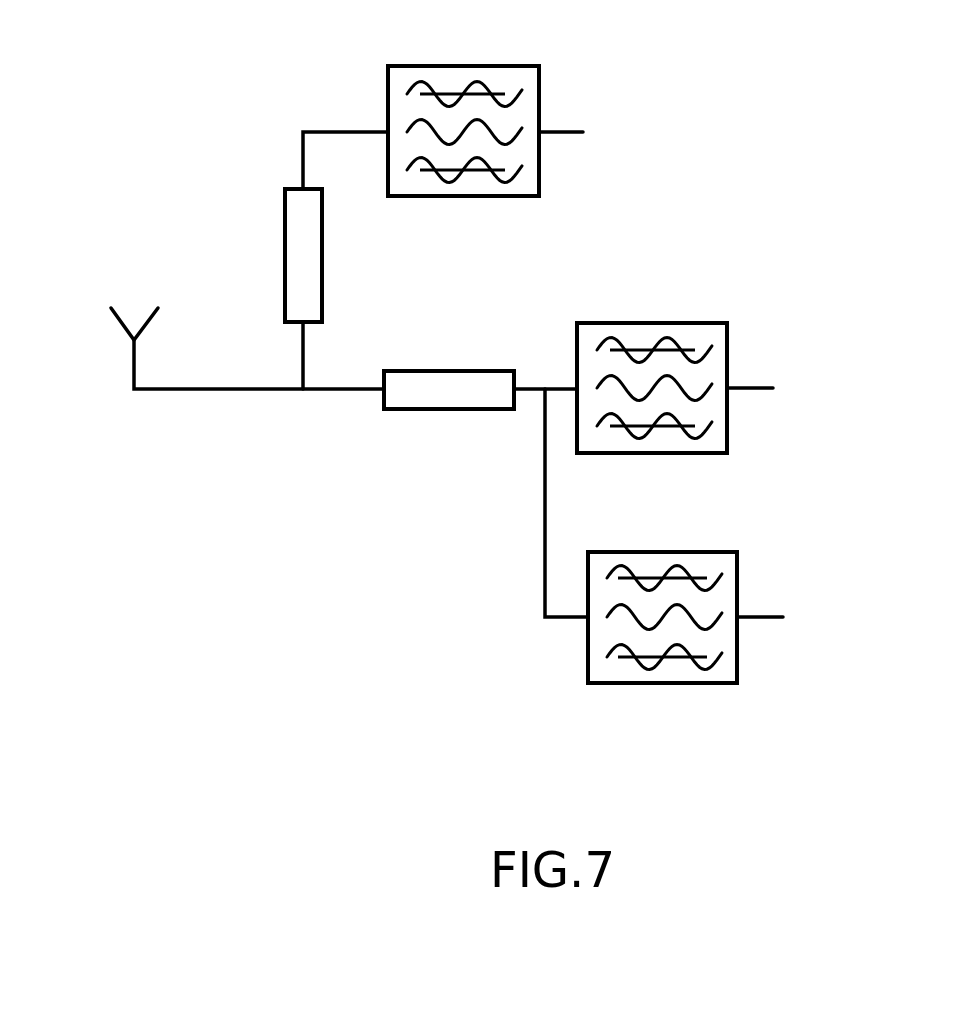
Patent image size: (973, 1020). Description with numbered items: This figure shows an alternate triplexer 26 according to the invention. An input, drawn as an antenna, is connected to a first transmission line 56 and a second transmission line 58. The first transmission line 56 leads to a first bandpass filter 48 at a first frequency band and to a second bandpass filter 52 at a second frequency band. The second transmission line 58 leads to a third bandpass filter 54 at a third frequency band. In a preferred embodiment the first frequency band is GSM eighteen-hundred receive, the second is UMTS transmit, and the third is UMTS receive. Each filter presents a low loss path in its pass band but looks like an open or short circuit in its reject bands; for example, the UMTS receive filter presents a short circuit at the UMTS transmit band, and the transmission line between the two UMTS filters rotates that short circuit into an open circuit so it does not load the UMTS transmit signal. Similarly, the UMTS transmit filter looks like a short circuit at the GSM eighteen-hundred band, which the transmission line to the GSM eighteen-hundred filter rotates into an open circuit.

The triplexer 26 is at (173, 48).
The first bandpass filter 48 is at (663, 683).
The second bandpass filter 52 is at (648, 323).
The third bandpass filter 54 is at (468, 196).
The first transmission line 56 is at (447, 409).
The second transmission line 58 is at (322, 265).